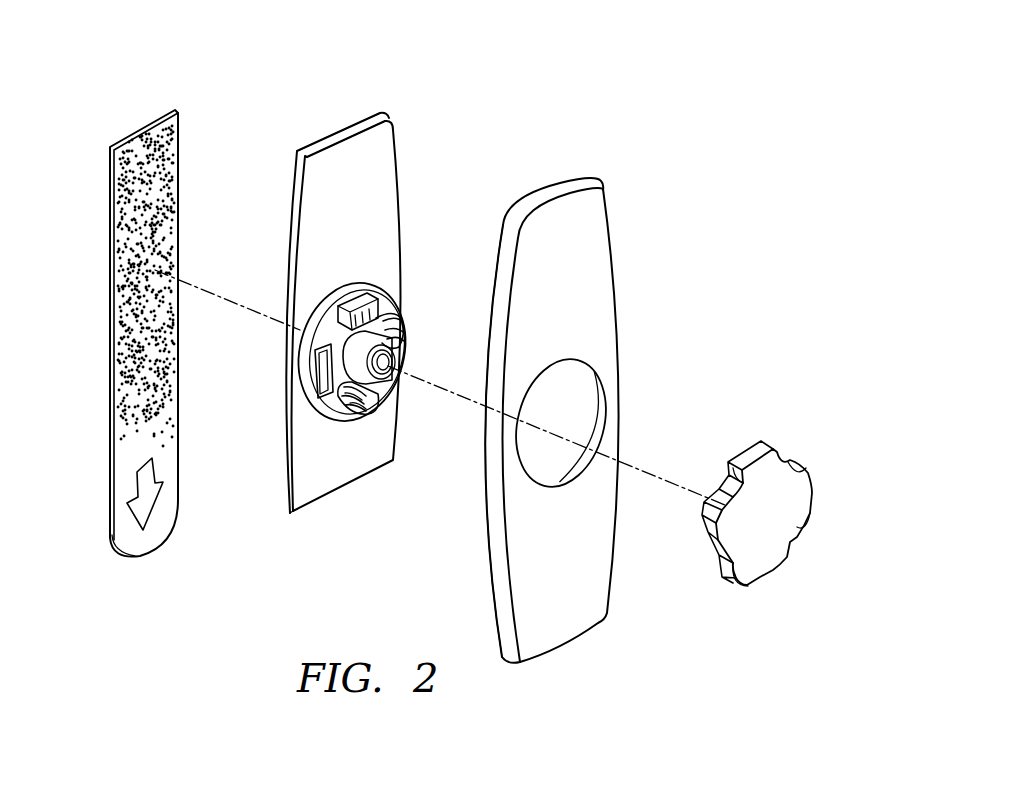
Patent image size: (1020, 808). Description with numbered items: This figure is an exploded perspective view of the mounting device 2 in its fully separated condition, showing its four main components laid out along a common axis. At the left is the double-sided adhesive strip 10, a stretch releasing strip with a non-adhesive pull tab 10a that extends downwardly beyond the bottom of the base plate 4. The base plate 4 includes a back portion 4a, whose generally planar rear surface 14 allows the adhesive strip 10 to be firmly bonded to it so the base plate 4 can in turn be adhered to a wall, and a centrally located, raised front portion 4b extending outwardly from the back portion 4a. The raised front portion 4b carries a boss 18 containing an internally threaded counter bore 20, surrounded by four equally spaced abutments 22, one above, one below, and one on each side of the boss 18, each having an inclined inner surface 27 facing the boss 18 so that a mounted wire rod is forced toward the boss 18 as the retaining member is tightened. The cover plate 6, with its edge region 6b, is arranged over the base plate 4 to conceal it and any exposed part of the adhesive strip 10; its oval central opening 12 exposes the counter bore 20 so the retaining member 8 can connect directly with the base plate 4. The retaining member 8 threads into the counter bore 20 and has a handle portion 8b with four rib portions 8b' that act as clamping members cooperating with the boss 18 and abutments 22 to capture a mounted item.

The mounting device 2 is at (205, 33).
The double-sided adhesive strip 10 is at (157, 152).
The non-adhesive pull tab 10a is at (127, 528).
The base plate 4 is at (305, 218).
The back portion 4a is at (333, 148).
The raised front portion 4b is at (328, 320).
The rear surface 14 is at (282, 478).
The boss 18 is at (355, 356).
The internally threaded counter bore 20 is at (390, 370).
The abutments 22 is at (352, 303).
The inclined inner surface 27 is at (337, 407).
The cover plate 6 is at (587, 225).
The side edge of cover plate 6b is at (495, 588).
The central opening 12 is at (587, 383).
The retaining member 8 is at (775, 523).
The handle portion 8b is at (728, 502).
The rib portions 8b' is at (763, 510).